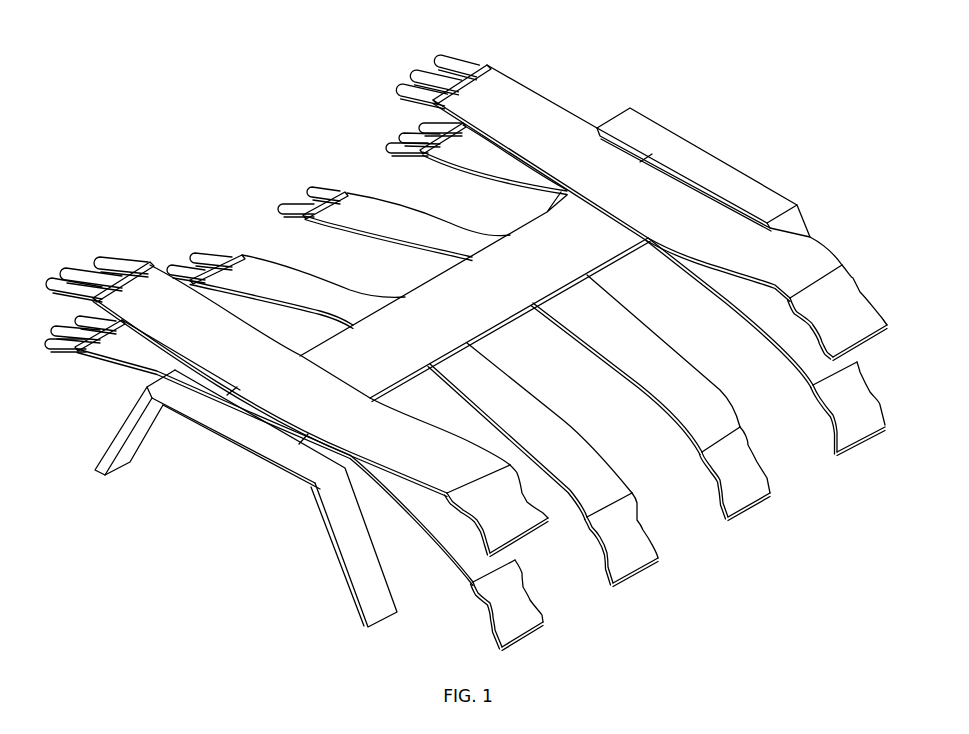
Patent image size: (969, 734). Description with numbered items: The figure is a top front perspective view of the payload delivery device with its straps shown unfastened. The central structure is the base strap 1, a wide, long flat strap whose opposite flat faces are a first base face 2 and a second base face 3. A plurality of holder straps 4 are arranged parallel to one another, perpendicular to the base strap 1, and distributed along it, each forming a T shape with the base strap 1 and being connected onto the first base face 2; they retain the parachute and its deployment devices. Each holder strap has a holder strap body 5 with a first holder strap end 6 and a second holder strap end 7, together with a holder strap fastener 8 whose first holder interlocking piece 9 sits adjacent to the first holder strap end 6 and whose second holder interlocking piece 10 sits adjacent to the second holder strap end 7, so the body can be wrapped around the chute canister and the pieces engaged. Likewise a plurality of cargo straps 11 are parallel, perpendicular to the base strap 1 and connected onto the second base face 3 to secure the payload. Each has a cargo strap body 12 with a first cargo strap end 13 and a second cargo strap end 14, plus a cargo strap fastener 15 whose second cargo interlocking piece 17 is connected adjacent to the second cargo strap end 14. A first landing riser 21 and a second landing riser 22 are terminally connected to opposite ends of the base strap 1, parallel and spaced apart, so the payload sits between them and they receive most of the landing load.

The base strap 1 is at (475, 297).
The first base face 2 is at (430, 285).
The second base face 3 is at (395, 388).
The plurality of holder straps 4 is at (77, 223).
The holder strap body 5 is at (338, 390).
The first holder strap end 6 is at (497, 72).
The second holder strap end 7 is at (834, 263).
The holder strap fastener 8 is at (73, 262).
The first holder interlocking piece 9 is at (420, 70).
The second holder interlocking piece 10 is at (873, 323).
The plurality of cargo straps 11 is at (808, 515).
The cargo strap body 12 is at (648, 340).
The first cargo strap end 13 is at (348, 192).
The second cargo strap end 14 is at (733, 423).
The cargo strap fastener 15 is at (297, 195).
The second cargo interlocking piece 17 is at (740, 503).
The first landing riser 21 is at (718, 167).
The second landing riser 22 is at (240, 450).